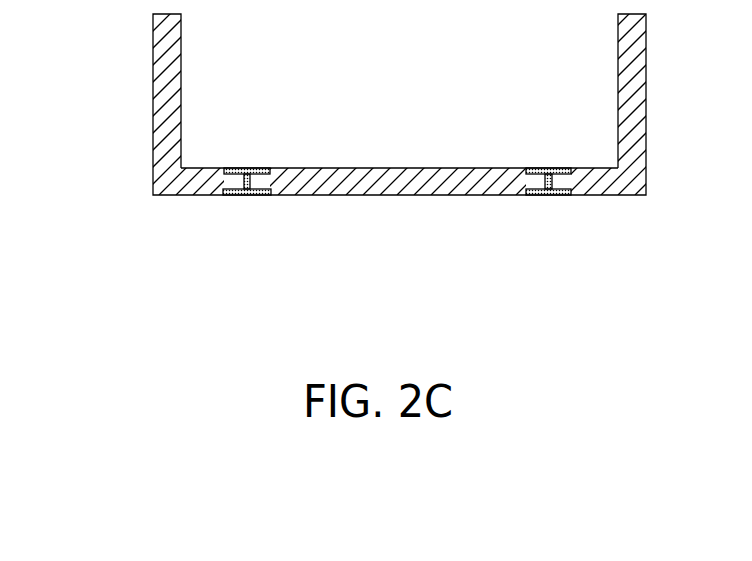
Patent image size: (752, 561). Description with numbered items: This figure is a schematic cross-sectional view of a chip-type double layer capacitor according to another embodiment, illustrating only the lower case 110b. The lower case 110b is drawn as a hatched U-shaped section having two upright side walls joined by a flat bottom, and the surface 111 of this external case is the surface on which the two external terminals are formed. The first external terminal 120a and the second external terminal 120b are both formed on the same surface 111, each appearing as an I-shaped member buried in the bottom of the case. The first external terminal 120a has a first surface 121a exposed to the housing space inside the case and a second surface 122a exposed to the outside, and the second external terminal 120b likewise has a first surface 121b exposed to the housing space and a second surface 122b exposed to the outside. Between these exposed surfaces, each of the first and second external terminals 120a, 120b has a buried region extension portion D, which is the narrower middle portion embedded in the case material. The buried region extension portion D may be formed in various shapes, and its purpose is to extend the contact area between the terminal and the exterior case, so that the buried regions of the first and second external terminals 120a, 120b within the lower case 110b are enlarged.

The lower case 110b is at (158, 52).
The surface of the external case 111 is at (420, 183).
The first external terminal 120a is at (213, 187).
The second external terminal 120b is at (551, 196).
The first surface of the first external terminal 121a is at (235, 168).
The first surface of the second external terminal 121b is at (538, 168).
The second surface of the first external terminal 122a is at (228, 195).
The second surface of the second external terminal 122b is at (558, 195).
The buried region extension portion D is at (540, 182).